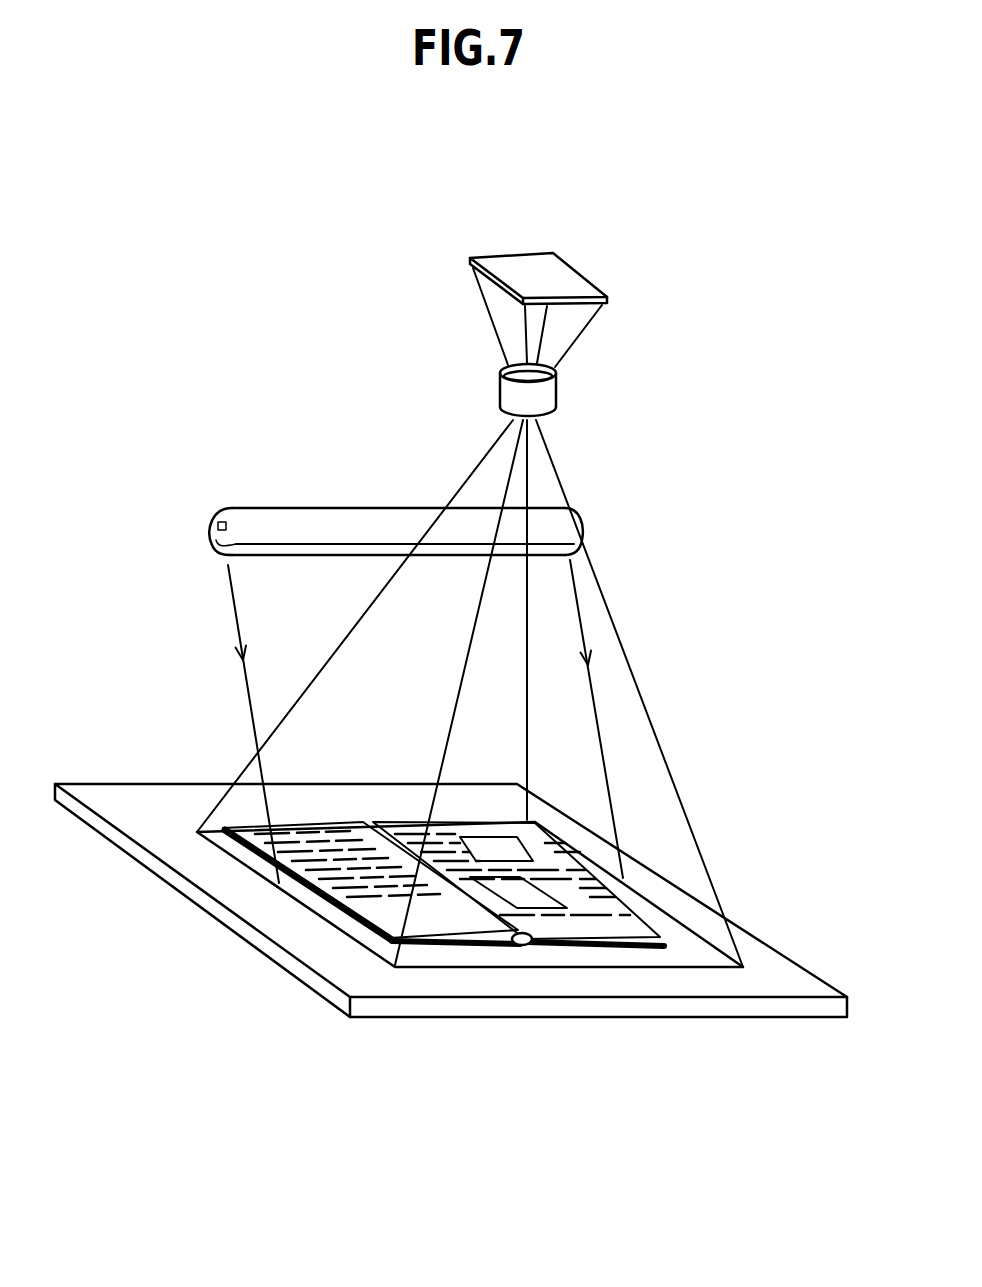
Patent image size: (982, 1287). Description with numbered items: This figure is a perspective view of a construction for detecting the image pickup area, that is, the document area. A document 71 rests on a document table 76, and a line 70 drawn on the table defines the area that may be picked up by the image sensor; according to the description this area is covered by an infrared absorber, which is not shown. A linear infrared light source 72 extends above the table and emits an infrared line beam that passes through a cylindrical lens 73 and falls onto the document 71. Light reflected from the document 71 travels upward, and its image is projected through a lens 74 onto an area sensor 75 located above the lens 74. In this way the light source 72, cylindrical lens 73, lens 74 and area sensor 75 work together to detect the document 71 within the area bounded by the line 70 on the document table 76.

The line 70 is at (610, 965).
The document 71 is at (338, 832).
The linear infrared light source 72 is at (210, 525).
The cylindrical lens 73 is at (215, 556).
The lens 74 is at (558, 402).
The area sensor 75 is at (590, 282).
The document table 76 is at (450, 1018).